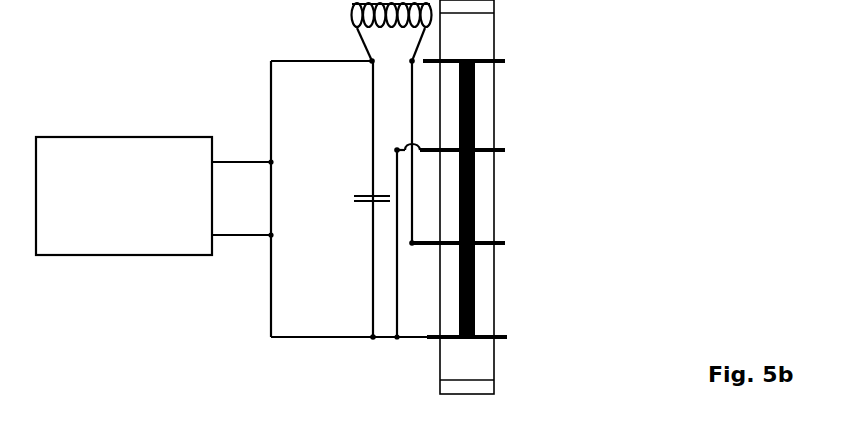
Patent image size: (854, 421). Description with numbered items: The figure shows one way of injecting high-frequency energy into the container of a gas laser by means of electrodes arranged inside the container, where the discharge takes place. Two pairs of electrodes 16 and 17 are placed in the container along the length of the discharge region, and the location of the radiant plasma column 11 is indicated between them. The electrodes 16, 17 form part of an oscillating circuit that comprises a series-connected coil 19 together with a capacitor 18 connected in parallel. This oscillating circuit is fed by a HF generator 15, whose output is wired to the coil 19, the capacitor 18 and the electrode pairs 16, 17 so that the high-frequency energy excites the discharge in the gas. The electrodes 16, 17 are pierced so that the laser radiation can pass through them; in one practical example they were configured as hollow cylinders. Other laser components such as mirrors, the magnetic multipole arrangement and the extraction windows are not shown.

The radiant plasma column 11 is at (473, 115).
The HF generator 15 is at (143, 225).
The electrode 16 is at (505, 61).
The electrode 17 is at (505, 150).
The capacitor 18 is at (358, 186).
The coil 19 is at (353, 15).